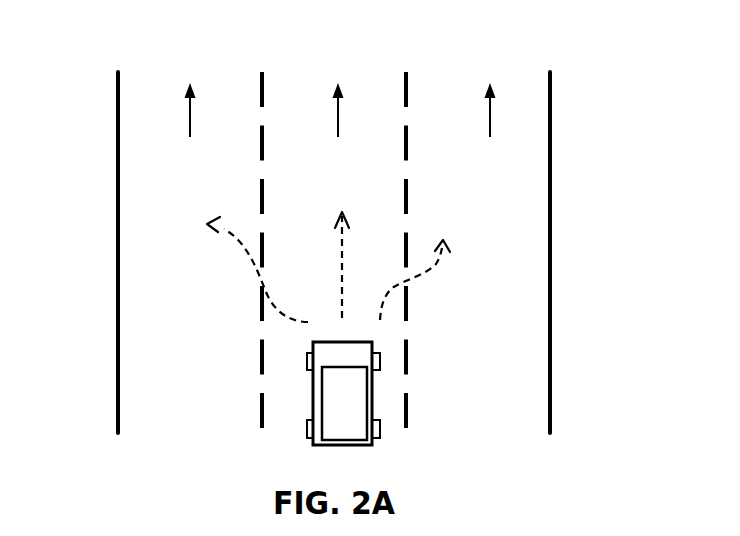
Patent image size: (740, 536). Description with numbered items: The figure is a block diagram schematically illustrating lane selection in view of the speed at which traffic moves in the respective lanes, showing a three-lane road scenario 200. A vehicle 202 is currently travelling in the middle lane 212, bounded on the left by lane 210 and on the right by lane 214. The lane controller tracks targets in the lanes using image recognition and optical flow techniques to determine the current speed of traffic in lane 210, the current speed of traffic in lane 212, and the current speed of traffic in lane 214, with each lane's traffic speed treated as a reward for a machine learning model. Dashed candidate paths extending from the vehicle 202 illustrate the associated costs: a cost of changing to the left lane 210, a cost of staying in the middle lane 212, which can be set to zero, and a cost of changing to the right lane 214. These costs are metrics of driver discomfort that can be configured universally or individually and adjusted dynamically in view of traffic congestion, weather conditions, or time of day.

The driving scenario / environment 200 is at (129, 37).
The lane 210 is at (171, 66).
The lane 212 is at (322, 62).
The lane 214 is at (471, 66).
The vehicle 202 is at (362, 416).